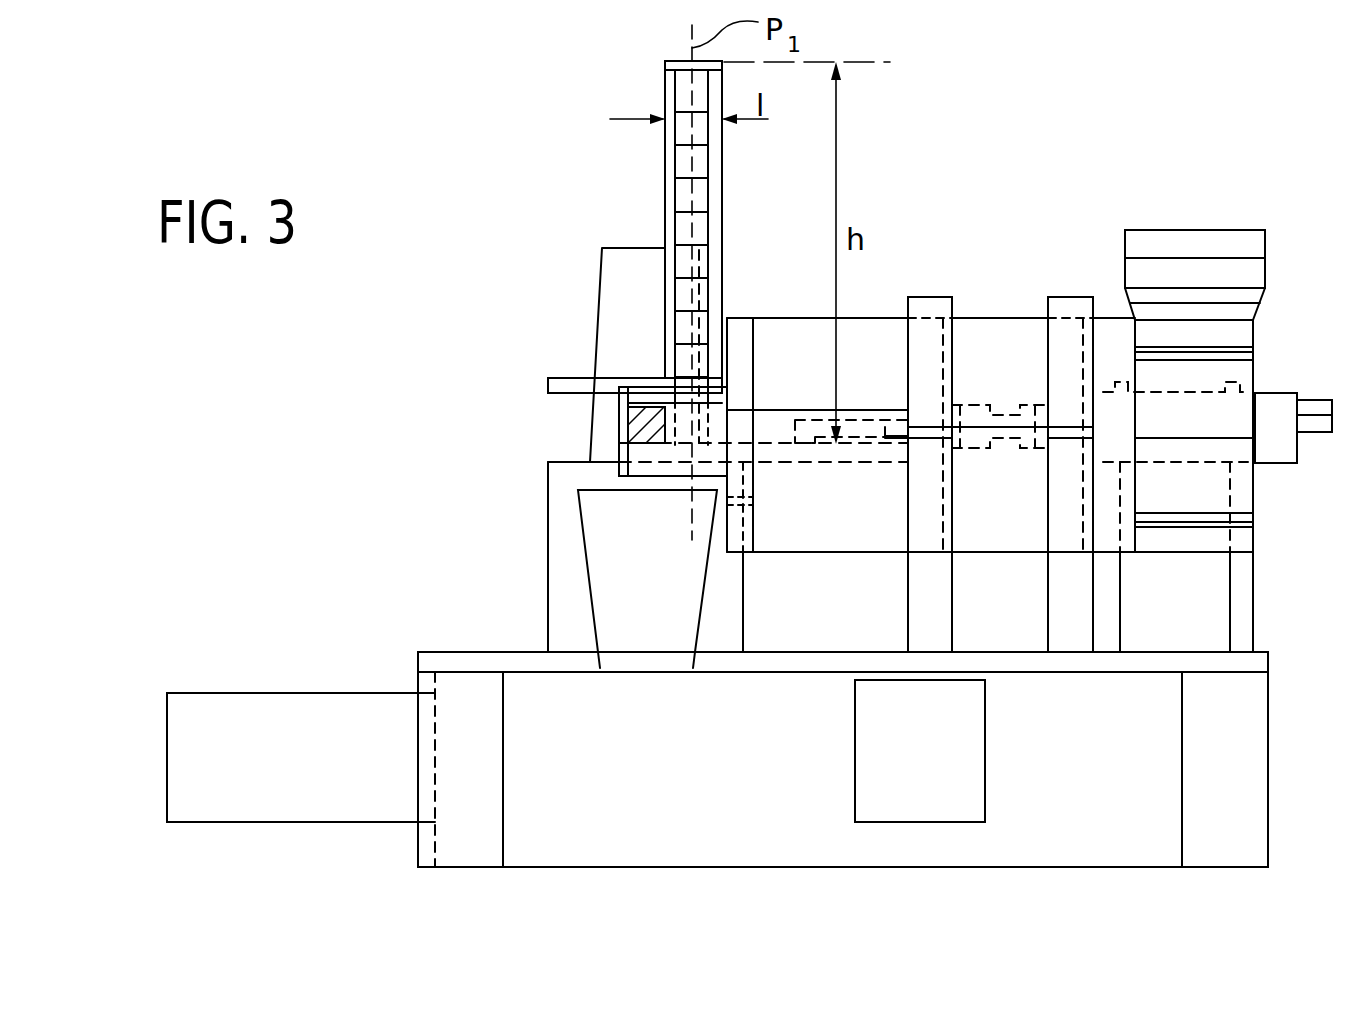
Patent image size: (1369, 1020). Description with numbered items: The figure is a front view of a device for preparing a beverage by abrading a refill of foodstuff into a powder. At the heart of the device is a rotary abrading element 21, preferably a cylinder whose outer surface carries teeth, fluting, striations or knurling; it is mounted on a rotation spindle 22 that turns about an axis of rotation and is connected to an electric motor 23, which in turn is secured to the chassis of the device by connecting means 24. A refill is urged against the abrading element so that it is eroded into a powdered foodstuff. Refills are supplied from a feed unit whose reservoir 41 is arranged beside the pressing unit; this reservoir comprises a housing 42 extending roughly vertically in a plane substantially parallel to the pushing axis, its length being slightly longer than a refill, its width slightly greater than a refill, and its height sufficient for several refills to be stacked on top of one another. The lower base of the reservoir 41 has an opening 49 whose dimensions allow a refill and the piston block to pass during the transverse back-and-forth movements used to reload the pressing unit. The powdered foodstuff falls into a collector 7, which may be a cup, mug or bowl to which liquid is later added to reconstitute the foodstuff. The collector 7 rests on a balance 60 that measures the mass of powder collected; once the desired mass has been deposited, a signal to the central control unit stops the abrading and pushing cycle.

The collector 7 is at (600, 530).
The abrading element 21 is at (640, 433).
The rotation spindle 22 is at (718, 425).
The electric motor 23 is at (880, 343).
The connecting means 24 is at (937, 602).
The reservoir 41 is at (722, 155).
The housing 42 is at (682, 97).
The opening 49 is at (668, 450).
The balance 60 is at (297, 682).